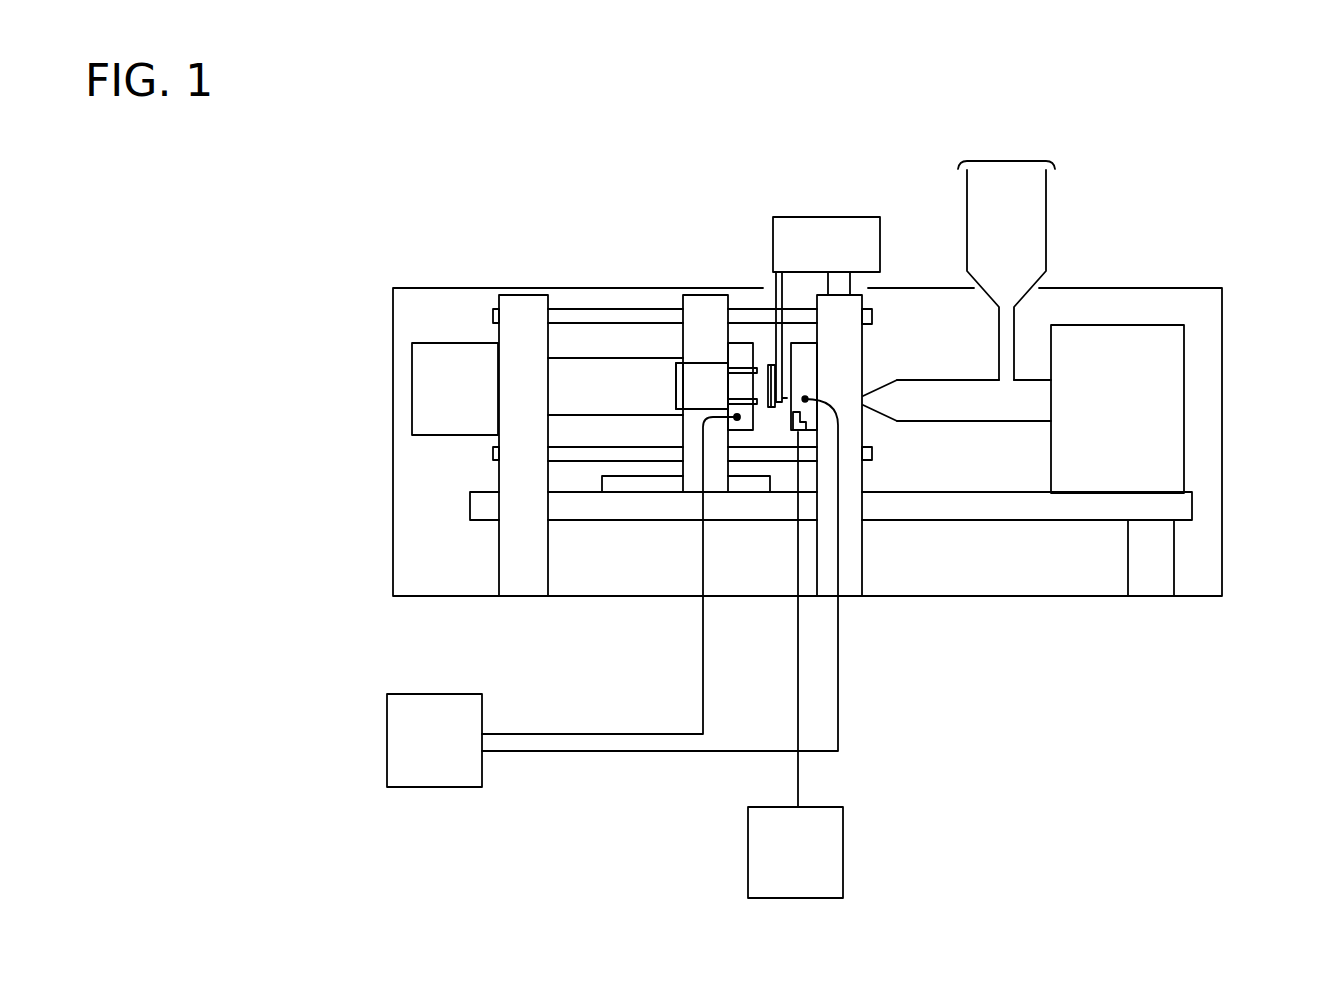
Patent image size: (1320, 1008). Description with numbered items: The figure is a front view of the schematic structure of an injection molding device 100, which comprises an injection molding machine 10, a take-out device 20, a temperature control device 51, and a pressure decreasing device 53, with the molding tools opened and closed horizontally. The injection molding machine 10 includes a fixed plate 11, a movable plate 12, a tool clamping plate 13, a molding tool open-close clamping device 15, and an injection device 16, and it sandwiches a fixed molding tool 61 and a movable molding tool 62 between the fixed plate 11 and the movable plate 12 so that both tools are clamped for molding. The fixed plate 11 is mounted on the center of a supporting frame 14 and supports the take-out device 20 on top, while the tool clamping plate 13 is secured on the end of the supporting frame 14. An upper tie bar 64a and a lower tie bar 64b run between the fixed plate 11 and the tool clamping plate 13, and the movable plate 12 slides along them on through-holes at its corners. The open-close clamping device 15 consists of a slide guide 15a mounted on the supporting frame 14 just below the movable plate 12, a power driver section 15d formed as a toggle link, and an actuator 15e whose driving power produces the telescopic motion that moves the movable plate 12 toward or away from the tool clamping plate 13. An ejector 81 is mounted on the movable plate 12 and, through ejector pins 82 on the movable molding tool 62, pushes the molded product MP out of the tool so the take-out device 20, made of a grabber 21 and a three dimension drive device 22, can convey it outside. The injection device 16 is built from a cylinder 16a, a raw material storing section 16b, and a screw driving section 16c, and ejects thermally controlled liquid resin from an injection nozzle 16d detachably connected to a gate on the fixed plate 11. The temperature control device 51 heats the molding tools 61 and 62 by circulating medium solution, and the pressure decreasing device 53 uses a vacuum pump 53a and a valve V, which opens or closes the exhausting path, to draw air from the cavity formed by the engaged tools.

The injection molding device 100 is at (1292, 62).
The injection molding machine 10 is at (599, 192).
The fixed plate 11 is at (862, 477).
The movable plate 12 is at (692, 472).
The tool clamping plate 13 is at (493, 467).
The supporting frame 14 is at (1174, 512).
The molding tool open-close clamping device 15 is at (449, 464).
The slide guide 15a is at (617, 488).
The power driver section 15d is at (558, 388).
The actuator 15e is at (447, 400).
The injection device 16 is at (1211, 440).
The cylinder 16a is at (994, 410).
The raw material storing section 16b is at (1046, 212).
The screw driving section 16c is at (1098, 308).
The injection nozzle 16d is at (878, 395).
The take-out device 20 is at (824, 207).
The grabber 21 is at (780, 403).
The three dimension drive device 22 is at (812, 247).
The temperature control device 51 is at (387, 720).
The pressure decreasing device 53 is at (722, 873).
The vacuum pump 53a is at (844, 837).
The fixed molding tool 61 is at (808, 363).
The movable molding tool 62 is at (747, 350).
The upper tie bar 64a is at (567, 317).
The lower tie bar 64b is at (570, 455).
The ejector 81 is at (675, 382).
The ejector pins 82 is at (737, 365).
The molded product MP is at (772, 408).
The valve V is at (806, 429).